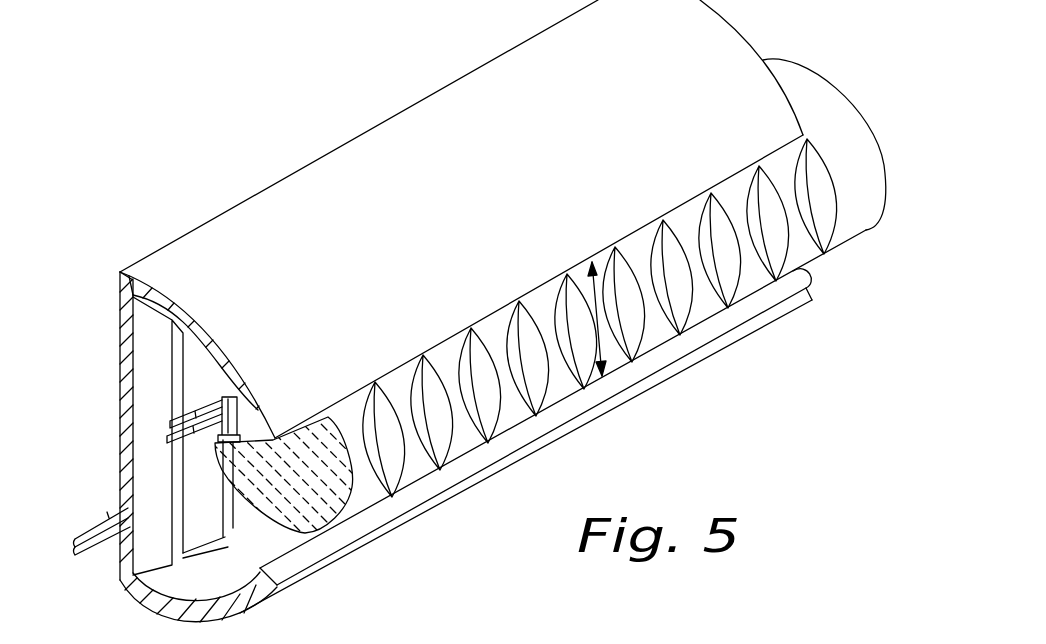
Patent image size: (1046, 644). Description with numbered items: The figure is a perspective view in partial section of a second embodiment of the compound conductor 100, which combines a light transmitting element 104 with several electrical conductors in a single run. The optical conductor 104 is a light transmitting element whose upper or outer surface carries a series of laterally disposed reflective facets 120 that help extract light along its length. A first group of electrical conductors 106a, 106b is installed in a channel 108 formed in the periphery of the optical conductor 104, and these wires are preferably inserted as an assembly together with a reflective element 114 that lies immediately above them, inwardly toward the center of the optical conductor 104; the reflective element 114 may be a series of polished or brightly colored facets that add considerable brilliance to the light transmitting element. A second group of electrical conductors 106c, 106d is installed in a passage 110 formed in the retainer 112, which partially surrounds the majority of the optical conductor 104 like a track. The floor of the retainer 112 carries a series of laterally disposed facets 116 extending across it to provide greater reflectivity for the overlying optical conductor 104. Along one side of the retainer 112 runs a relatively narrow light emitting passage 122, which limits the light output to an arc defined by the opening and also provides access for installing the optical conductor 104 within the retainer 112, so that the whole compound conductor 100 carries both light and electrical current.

The compound conductor 100 is at (733, 392).
The light transmitting element 104 is at (323, 533).
The electrical conductor 106a is at (170, 424).
The electrical conductor 106b is at (167, 440).
The electrical conductor 106c is at (90, 540).
The electrical conductor 106d is at (90, 557).
The channel 108 is at (220, 443).
The passage 110 is at (131, 537).
The retainer 112 is at (463, 219).
The reflective element 114 is at (238, 397).
The facets 116 is at (228, 518).
The reflective facets 120 is at (397, 463).
The light emitting passage 122 is at (602, 376).